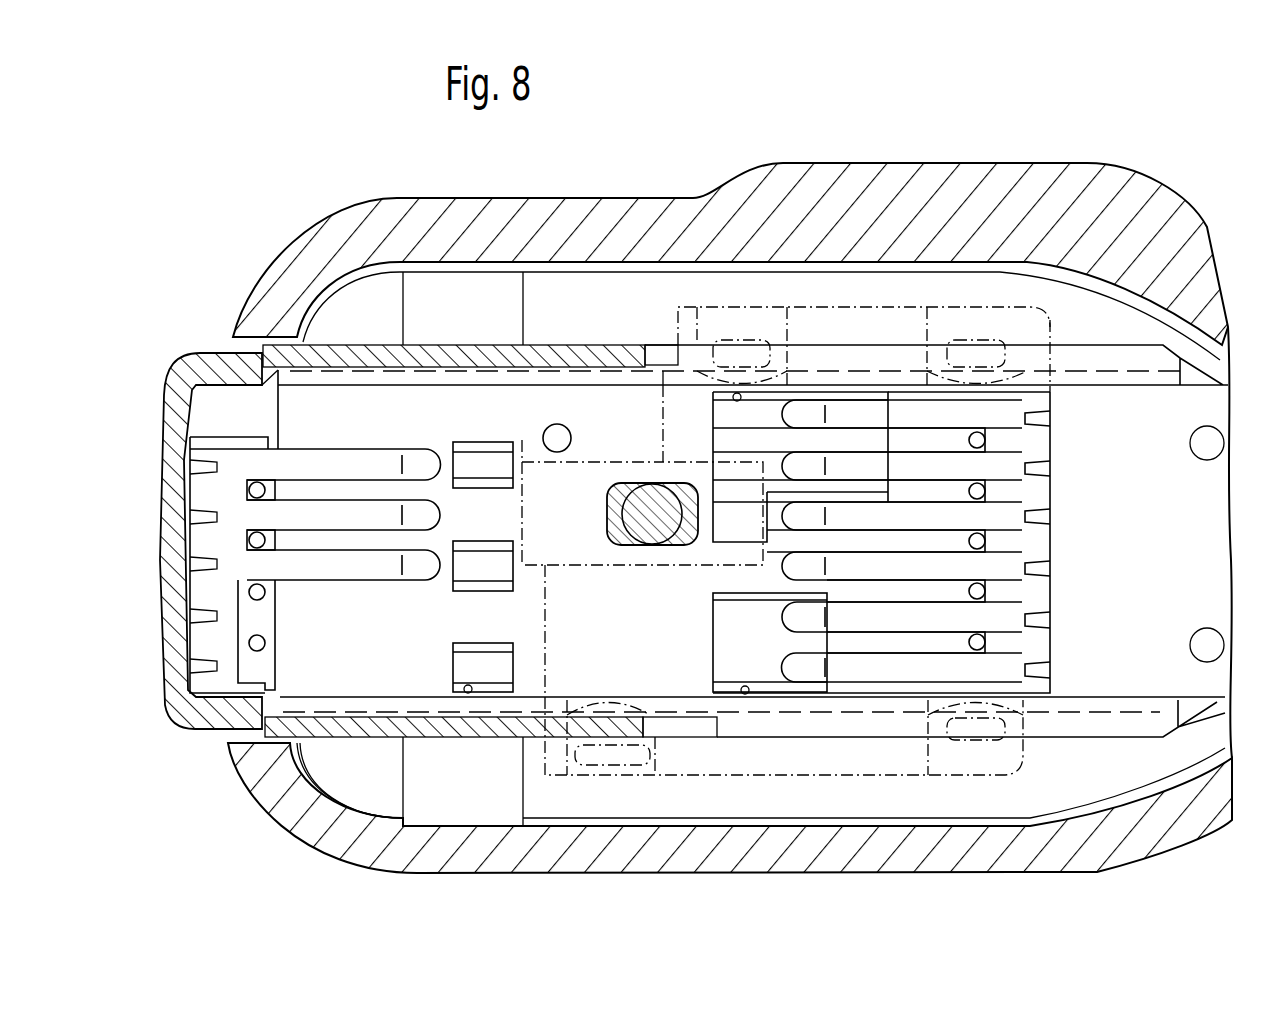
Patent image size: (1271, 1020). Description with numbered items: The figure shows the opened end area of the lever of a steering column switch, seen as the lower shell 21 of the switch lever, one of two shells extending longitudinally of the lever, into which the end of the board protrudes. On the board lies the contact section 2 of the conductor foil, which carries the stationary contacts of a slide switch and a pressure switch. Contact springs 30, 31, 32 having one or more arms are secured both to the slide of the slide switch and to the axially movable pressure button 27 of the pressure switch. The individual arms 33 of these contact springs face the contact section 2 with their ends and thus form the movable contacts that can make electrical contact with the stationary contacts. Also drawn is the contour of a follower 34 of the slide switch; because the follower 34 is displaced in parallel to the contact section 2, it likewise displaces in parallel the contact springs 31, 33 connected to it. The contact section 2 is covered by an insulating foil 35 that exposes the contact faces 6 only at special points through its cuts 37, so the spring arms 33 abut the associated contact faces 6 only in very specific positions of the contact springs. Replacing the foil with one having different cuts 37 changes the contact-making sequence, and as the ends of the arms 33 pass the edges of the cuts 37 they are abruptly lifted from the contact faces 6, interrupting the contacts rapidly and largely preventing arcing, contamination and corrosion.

The contact section 2 is at (502, 692).
The contact faces 6 is at (463, 668).
The lower shell 21 is at (963, 860).
The pressure button 27 is at (183, 722).
The contact spring 30 is at (228, 480).
The contact spring 31 is at (1020, 483).
The contact spring 32 is at (1017, 635).
The arms 33 is at (343, 465).
The follower 34 is at (688, 776).
The insulating foil 35 is at (297, 745).
The cuts 37 is at (487, 440).